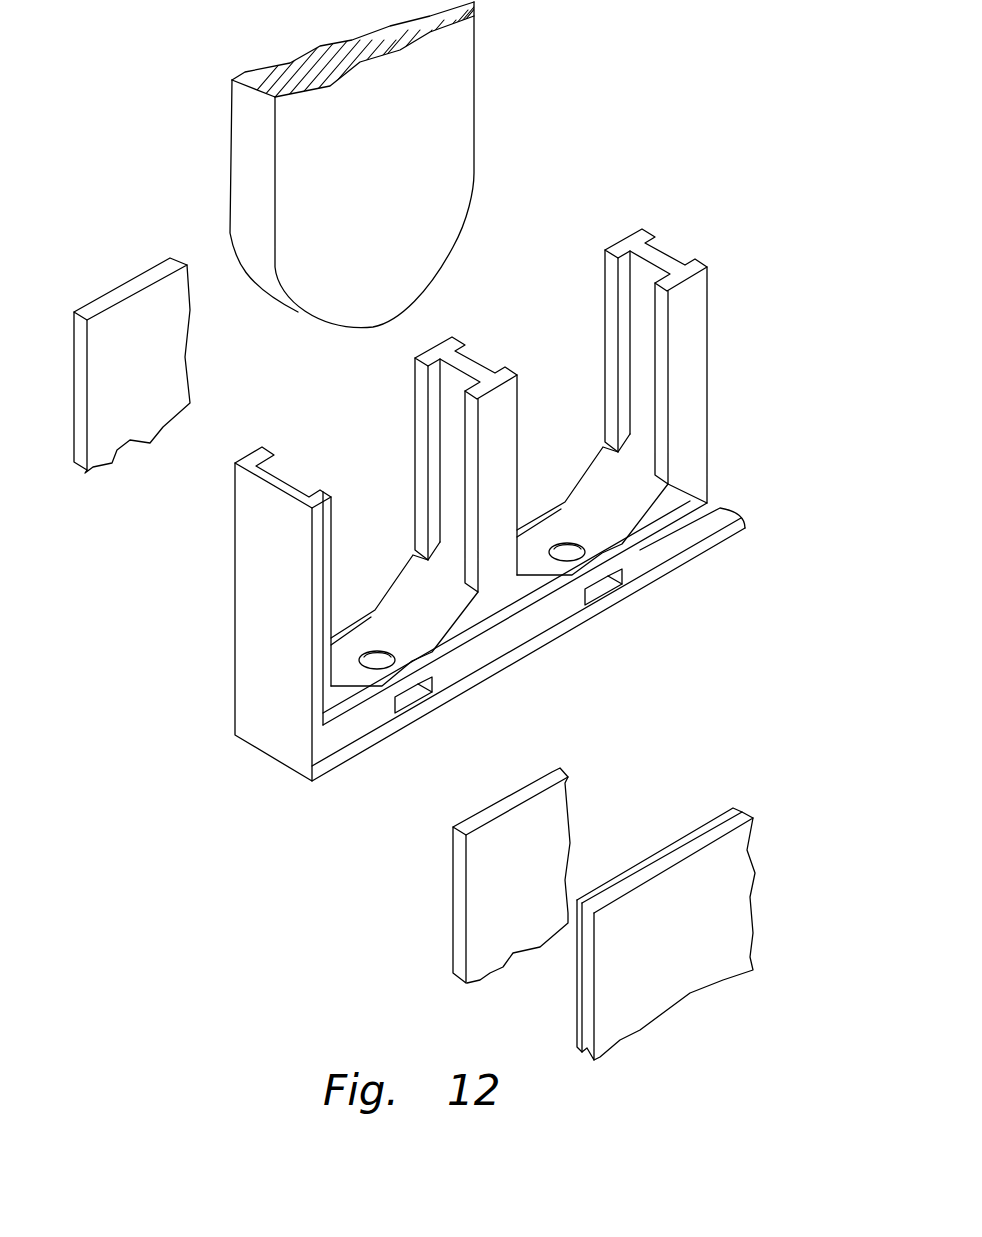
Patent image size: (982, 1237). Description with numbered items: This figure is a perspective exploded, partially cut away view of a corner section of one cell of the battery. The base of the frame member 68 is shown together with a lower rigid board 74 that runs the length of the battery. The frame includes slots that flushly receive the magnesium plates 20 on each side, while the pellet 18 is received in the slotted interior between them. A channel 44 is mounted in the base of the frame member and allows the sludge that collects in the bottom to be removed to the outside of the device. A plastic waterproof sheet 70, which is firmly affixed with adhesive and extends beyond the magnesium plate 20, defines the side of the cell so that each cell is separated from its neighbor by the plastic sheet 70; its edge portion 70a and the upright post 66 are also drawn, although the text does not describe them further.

The pellet 18 is at (425, 143).
The magnesium plate 20 is at (138, 318).
The post 66 is at (520, 410).
The frame member 68 is at (252, 538).
The lower rigid board 74 is at (345, 755).
The channel 44 is at (417, 695).
The plastic waterproof sheet 70 is at (704, 904).
The lip 70a is at (687, 833).